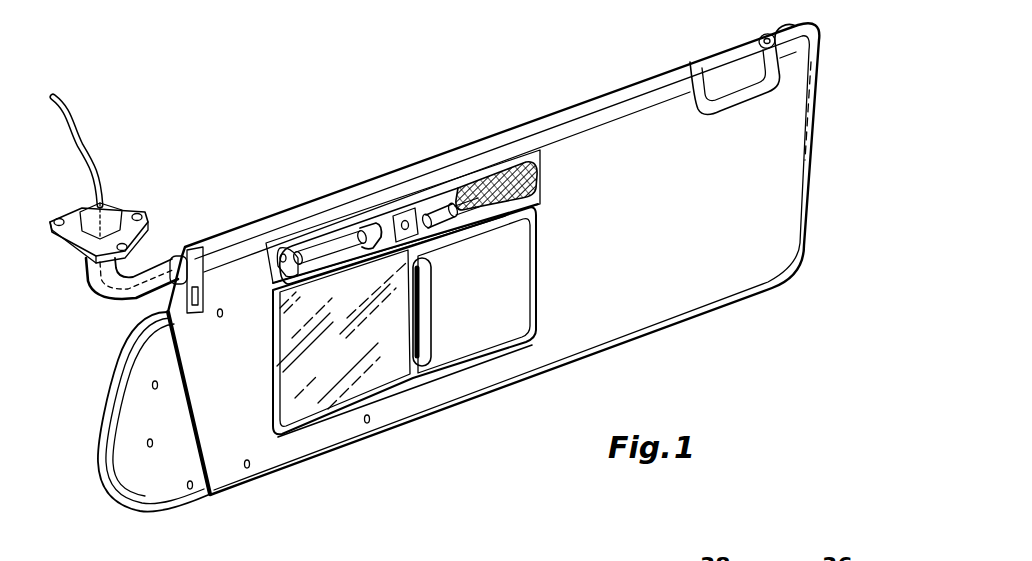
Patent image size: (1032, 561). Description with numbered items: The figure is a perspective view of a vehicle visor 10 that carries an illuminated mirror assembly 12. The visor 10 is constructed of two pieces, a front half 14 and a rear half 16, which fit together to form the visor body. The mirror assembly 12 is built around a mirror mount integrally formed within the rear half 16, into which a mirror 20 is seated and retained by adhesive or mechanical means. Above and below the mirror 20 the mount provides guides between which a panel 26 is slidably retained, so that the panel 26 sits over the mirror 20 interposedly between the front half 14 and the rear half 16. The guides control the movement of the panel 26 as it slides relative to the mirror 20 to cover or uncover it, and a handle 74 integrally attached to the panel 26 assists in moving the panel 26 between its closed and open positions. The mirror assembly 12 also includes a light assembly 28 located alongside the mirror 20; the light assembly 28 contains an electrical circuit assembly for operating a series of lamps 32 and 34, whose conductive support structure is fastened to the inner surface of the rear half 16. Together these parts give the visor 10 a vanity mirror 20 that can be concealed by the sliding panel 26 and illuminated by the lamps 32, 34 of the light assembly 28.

The visor 10 is at (850, 55).
The illuminated mirror assembly 12 is at (272, 290).
The front half 14 is at (165, 498).
The rear half 16 is at (105, 478).
The mirror 20 is at (385, 375).
The panel 26 is at (481, 333).
The light assembly 28 is at (410, 195).
The lamp 32 is at (334, 232).
The lamp 34 is at (483, 222).
The handle 74 is at (430, 312).